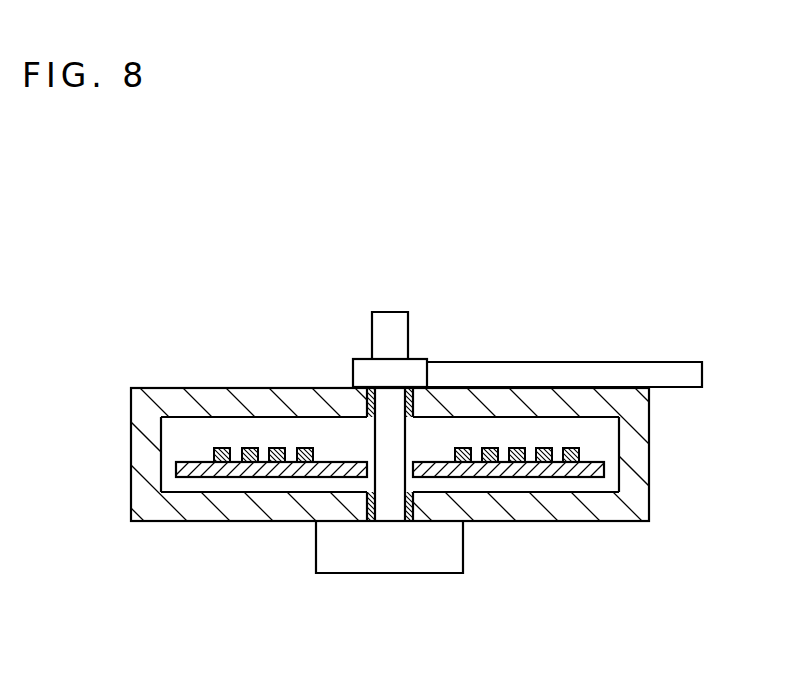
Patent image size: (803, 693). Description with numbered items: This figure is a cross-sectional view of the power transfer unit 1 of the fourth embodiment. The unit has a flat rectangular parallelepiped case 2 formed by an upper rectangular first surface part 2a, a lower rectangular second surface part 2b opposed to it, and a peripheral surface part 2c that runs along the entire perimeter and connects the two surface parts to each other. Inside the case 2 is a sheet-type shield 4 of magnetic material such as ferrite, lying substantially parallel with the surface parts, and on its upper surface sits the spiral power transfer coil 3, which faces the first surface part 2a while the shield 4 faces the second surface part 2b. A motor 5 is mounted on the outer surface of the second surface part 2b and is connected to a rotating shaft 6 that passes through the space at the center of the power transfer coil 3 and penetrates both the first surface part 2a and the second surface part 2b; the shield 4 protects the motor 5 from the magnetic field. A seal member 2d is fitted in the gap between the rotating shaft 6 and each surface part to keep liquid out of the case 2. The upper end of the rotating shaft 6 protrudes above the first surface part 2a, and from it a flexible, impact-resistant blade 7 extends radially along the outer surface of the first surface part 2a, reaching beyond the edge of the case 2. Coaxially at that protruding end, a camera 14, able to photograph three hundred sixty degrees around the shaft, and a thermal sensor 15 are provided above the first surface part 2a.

The power transfer unit 1 is at (745, 183).
The case 2 is at (656, 501).
The first surface part 2a is at (168, 398).
The second surface part 2b is at (212, 513).
The peripheral surface part 2c is at (140, 491).
The seal member 2d is at (408, 385).
The power transfer coil 3 is at (579, 455).
The shield 4 is at (530, 470).
The motor 5 is at (347, 563).
The rotating shaft 6 is at (388, 397).
The blade 7 is at (683, 368).
The camera 14 is at (383, 284).
The thermal sensor 15 is at (386, 317).